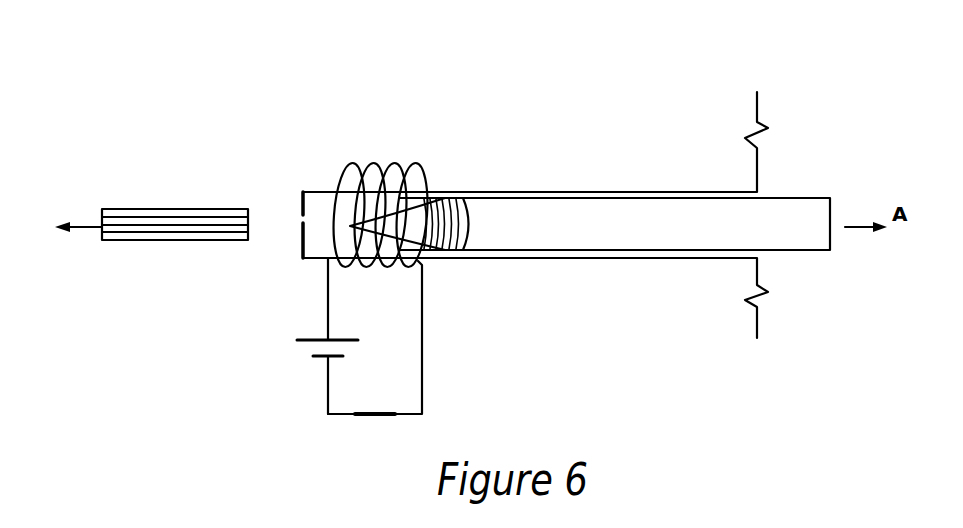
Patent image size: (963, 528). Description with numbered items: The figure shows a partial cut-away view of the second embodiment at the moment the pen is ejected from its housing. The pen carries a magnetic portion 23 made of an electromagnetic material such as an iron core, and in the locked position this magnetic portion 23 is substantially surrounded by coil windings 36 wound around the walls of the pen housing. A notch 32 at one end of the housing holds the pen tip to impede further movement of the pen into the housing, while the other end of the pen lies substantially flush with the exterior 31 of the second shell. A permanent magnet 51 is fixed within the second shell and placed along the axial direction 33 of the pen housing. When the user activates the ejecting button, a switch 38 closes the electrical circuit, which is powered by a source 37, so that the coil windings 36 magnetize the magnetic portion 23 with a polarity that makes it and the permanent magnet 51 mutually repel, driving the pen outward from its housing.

The magnetic portion 23 is at (455, 200).
The exterior 31 is at (760, 157).
The notch 32 is at (296, 193).
The axial direction 33 is at (67, 219).
The coil windings 36 is at (370, 165).
The battery 37 is at (300, 352).
The switch 38 is at (372, 416).
The permanent magnet 51 is at (142, 217).